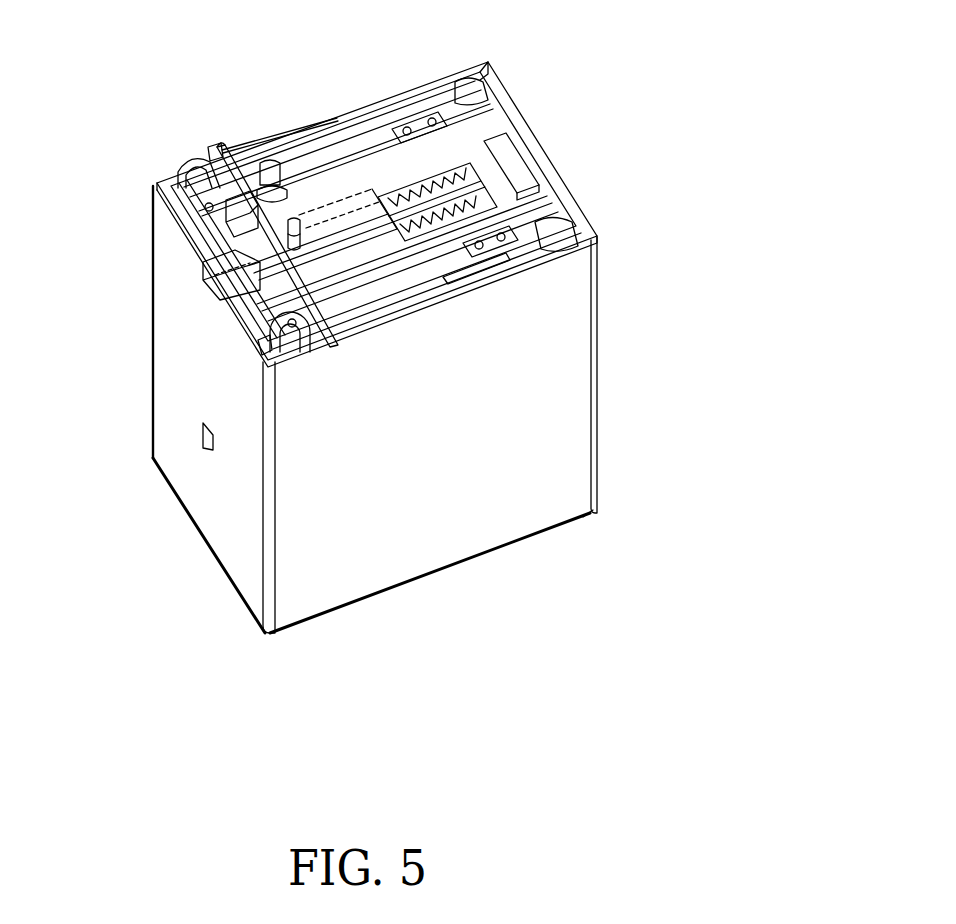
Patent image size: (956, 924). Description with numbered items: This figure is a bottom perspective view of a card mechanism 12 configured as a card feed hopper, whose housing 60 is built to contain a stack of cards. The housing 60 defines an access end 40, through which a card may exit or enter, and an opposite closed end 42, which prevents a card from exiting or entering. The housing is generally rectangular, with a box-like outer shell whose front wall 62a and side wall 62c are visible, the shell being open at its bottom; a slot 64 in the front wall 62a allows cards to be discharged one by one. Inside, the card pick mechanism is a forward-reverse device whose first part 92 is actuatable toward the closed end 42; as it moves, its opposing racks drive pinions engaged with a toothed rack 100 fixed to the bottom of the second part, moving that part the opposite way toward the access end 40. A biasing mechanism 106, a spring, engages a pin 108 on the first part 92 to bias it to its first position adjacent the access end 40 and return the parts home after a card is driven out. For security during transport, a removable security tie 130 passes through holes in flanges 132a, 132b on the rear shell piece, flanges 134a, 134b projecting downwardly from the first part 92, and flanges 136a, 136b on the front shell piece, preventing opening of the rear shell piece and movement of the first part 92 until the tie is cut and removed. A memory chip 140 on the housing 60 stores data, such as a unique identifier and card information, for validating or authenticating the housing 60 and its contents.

The card mechanism 12 is at (369, 363).
The access end 40 is at (406, 432).
The closed end 42 is at (596, 362).
The housing 60 is at (585, 520).
The front wall 62a is at (227, 530).
The side wall 62c is at (325, 587).
The slot 64 is at (170, 233).
The first part 92 is at (360, 188).
The toothed rack 100 is at (480, 155).
The biasing mechanism 106 is at (360, 192).
The pin 108 is at (290, 215).
The removable security tie 130 is at (243, 157).
The flange 132a is at (207, 153).
The flange 132b is at (262, 343).
The flange 134a is at (247, 208).
The flange 134b is at (215, 265).
The flange 136a is at (187, 170).
The flange 136b is at (232, 312).
The memory chip 140 is at (205, 442).